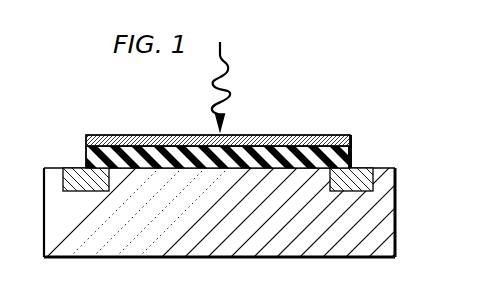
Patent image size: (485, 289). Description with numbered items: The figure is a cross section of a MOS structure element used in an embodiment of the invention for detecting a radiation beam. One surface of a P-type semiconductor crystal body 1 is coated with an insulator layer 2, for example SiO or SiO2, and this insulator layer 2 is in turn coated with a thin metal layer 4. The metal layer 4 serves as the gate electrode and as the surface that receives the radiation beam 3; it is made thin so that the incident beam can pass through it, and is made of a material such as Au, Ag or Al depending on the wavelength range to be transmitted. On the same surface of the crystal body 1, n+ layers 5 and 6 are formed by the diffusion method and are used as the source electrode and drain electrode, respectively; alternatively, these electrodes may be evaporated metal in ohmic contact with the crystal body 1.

The P-type semiconductor crystal body 1 is at (392, 204).
The insulator layer 2 is at (352, 146).
The radiation beam 3 is at (229, 97).
The thin metal layer 4 is at (331, 136).
The n+ layer 5 is at (76, 168).
The n+ layer 6 is at (368, 170).